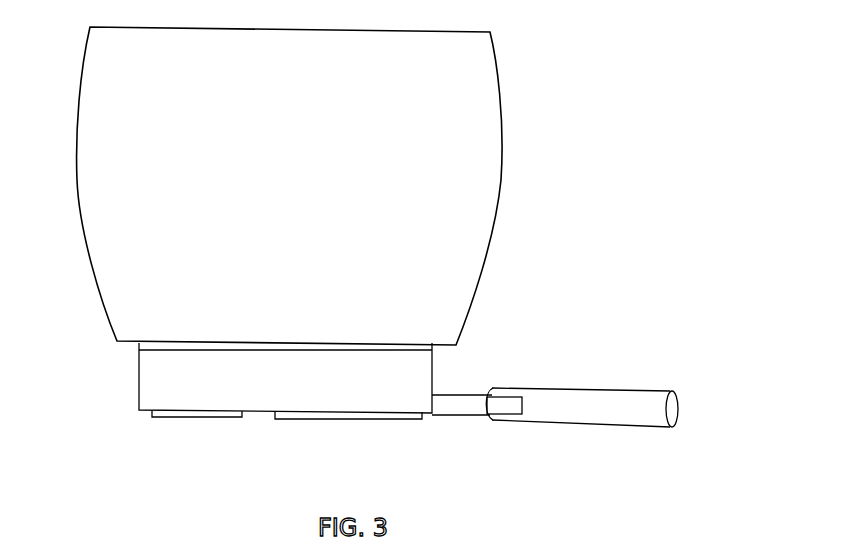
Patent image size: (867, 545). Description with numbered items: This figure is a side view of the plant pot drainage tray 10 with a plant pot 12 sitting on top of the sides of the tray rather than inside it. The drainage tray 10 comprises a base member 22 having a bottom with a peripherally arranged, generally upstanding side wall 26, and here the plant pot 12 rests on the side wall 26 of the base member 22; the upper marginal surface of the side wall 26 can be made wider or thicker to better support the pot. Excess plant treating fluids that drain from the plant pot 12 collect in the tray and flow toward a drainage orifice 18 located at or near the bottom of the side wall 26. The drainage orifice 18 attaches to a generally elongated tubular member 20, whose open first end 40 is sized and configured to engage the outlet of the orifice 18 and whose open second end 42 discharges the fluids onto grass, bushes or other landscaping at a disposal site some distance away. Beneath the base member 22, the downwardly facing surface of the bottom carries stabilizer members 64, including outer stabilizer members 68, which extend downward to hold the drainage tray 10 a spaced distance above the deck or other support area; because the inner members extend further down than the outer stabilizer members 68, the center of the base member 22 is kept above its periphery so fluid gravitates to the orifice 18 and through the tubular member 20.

The plant pot drainage tray 10 is at (133, 378).
The plant pot 12 is at (481, 173).
The drainage orifice 18 is at (440, 413).
The tubular member 20 is at (595, 409).
The base member 22 is at (412, 375).
The side wall 26 is at (293, 388).
The first end 40 is at (490, 418).
The second end 42 is at (672, 410).
The stabilizer members 64 is at (187, 418).
The outer stabilizer members 68 is at (373, 420).